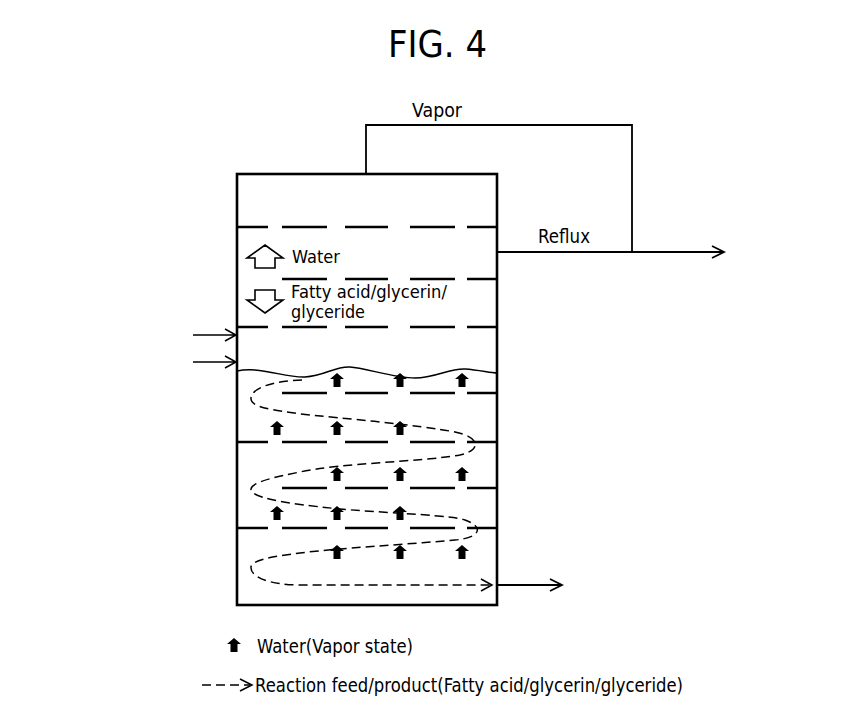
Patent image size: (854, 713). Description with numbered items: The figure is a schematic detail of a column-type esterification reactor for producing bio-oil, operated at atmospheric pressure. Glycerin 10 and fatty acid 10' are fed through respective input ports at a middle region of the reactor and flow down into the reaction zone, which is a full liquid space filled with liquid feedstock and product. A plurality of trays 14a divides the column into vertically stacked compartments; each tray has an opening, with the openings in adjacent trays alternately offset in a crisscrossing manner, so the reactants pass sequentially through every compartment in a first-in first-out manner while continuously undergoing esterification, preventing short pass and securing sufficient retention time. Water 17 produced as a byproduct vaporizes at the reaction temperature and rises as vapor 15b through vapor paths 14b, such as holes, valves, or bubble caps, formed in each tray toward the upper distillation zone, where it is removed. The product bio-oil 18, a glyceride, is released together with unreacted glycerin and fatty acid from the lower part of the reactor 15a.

The glycerin 10 is at (179, 306).
The fatty acid 10' is at (151, 394).
The tray 14a is at (250, 442).
The vapor path 14b is at (463, 488).
The lower part of the reactor 15a is at (252, 565).
The water vapor 15b is at (270, 514).
The water 17 is at (753, 237).
The bio-oil (glyceride) 18 is at (593, 570).